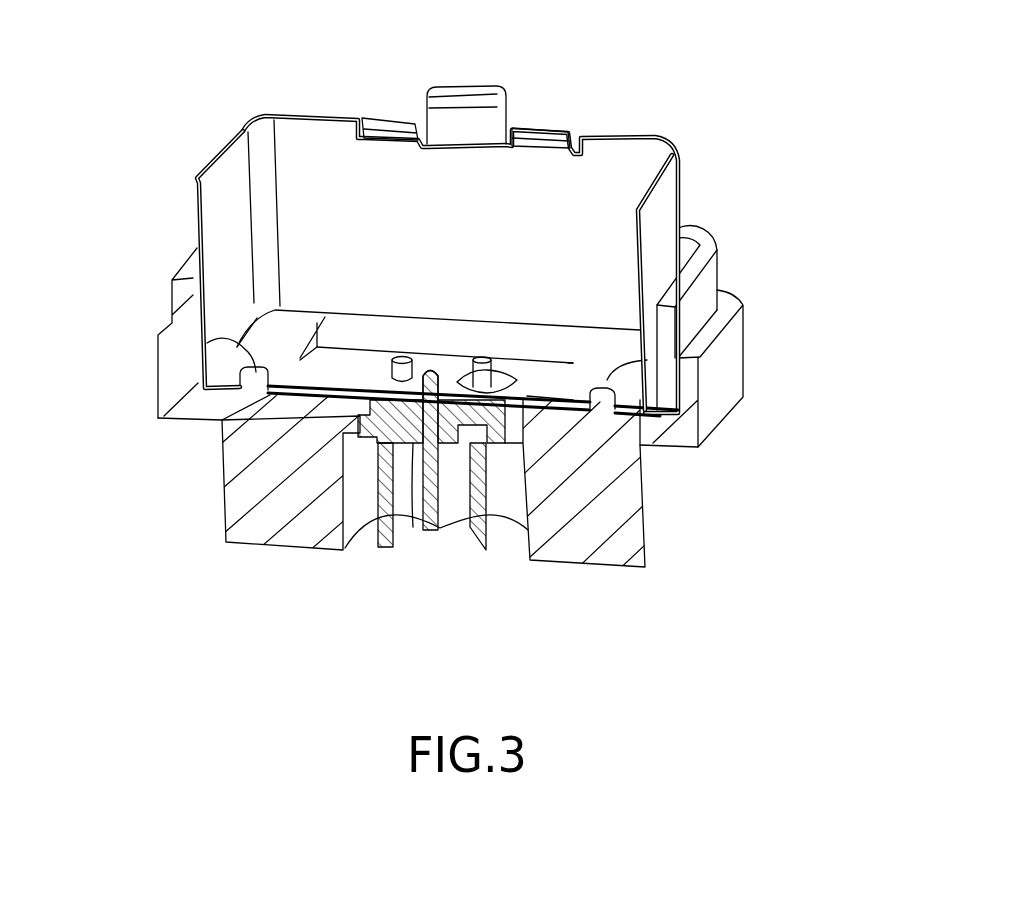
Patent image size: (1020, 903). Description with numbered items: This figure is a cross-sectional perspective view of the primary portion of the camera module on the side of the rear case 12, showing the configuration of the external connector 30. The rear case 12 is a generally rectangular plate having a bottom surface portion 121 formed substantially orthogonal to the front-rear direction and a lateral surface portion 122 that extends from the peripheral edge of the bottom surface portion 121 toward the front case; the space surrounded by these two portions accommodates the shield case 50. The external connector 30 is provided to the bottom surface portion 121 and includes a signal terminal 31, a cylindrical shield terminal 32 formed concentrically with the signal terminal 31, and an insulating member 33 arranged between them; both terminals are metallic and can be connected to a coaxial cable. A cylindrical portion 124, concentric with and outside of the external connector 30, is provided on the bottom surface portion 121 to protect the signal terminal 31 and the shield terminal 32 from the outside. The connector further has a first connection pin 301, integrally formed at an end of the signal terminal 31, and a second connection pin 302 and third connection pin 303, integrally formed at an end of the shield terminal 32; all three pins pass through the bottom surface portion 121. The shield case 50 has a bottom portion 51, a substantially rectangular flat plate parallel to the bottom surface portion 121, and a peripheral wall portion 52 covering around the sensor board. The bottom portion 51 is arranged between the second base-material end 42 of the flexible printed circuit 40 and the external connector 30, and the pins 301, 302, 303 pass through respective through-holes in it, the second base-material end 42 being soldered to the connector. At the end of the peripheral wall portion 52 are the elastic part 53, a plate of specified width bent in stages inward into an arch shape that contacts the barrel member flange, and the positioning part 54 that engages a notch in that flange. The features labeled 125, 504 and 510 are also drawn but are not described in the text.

The rear case 12 is at (866, 260).
The bottom surface portion 121 is at (650, 452).
The lateral surface portion 122 is at (713, 272).
The cylindrical portion 124 is at (240, 549).
The positioning protrusion 125 is at (197, 333).
The external connector 30 is at (526, 604).
The signal terminal 31 is at (441, 516).
The shield terminal 32 is at (490, 529).
The insulating member 33 is at (399, 548).
The first connection pin 301 is at (426, 366).
The second connection pin 302 is at (394, 356).
The third connection pin 303 is at (488, 354).
The flexible printed circuit 40 is at (438, 210).
The second base-material end 42 is at (350, 358).
The shield case 50 is at (682, 70).
The bottom portion 51 is at (562, 340).
The peripheral wall portion 52 is at (646, 134).
The elastic part 53 is at (393, 119).
The positioning part 54 is at (466, 97).
The notch 504 is at (257, 307).
The cover flange 510 is at (530, 396).